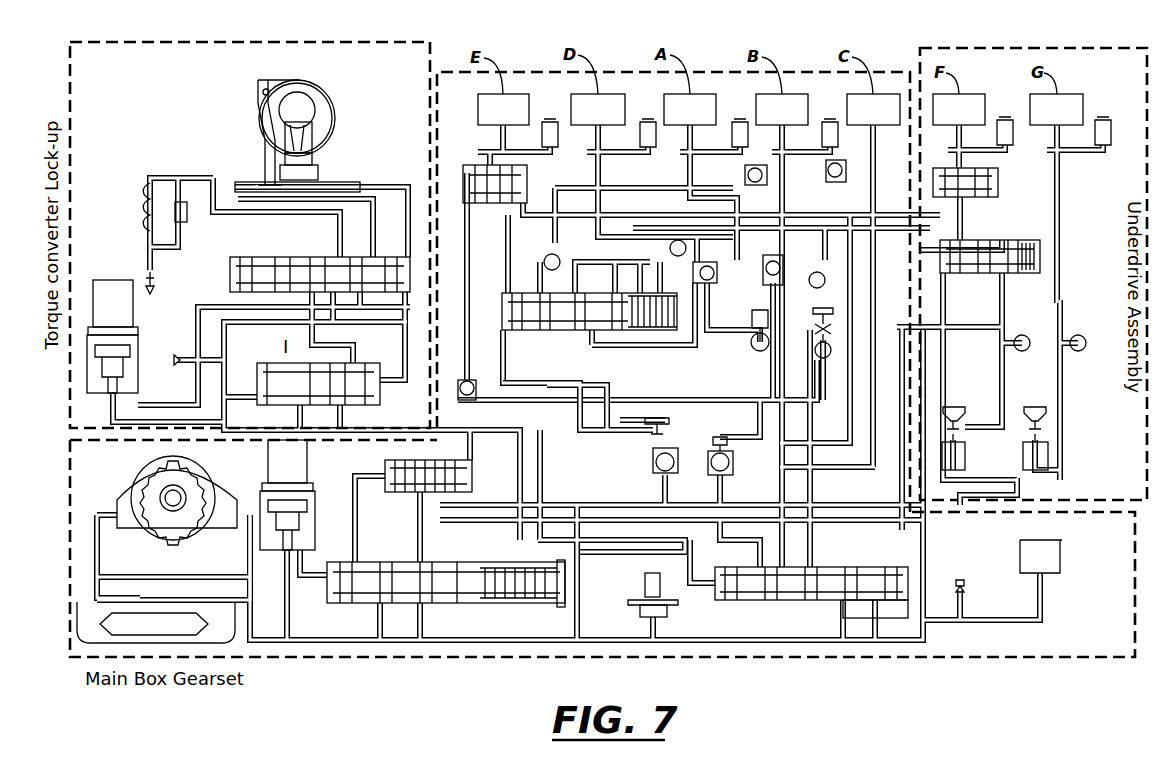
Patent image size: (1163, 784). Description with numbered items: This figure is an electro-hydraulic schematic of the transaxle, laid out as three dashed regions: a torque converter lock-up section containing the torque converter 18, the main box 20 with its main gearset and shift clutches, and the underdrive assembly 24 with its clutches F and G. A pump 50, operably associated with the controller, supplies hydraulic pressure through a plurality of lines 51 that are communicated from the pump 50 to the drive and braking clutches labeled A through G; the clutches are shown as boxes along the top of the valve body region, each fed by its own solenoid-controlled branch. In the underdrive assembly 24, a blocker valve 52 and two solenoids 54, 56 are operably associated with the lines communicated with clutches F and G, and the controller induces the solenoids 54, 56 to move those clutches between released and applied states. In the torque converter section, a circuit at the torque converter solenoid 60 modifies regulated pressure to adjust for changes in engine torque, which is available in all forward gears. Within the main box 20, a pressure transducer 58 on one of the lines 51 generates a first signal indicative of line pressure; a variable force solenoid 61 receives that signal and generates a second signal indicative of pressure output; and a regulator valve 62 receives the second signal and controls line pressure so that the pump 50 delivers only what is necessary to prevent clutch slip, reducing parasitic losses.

The torque converter 18 is at (317, 92).
The main box 20 is at (307, 657).
The underdrive assembly 24 is at (1113, 46).
The pump 50 is at (132, 473).
The lines 51 is at (693, 360).
The blocker valve 52 is at (1040, 240).
The solenoid 54 is at (955, 407).
The solenoid 56 is at (1040, 410).
The pressure transducer 58 is at (640, 598).
The torque converter solenoid 60 is at (117, 280).
The variable force solenoid 61 is at (308, 467).
The regulator valve 62 is at (530, 567).